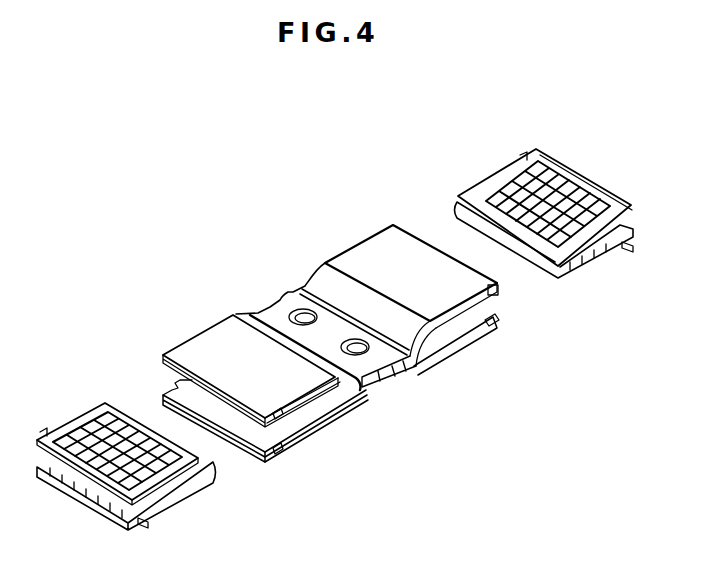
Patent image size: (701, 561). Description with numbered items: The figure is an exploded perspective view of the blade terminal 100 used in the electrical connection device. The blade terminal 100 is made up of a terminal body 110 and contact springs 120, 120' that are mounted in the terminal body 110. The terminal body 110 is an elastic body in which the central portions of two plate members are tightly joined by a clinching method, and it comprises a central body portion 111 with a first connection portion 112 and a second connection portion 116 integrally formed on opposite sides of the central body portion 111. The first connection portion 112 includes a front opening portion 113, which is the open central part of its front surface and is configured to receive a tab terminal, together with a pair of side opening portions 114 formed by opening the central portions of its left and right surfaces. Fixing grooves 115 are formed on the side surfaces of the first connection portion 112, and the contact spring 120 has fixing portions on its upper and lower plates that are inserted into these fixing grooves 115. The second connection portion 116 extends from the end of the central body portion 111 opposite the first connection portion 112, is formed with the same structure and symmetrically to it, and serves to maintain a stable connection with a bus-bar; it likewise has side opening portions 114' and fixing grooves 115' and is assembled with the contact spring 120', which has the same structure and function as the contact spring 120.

The blade terminal 100 is at (120, 342).
The terminal body 110 is at (268, 282).
The central body portion 111 is at (395, 378).
The first connection portion 112 is at (208, 352).
The front opening portion 113 is at (233, 440).
The side opening portions 114 is at (324, 438).
The fixing grooves 115 is at (313, 457).
The second connection portion 116 is at (365, 253).
The side opening portions 114' is at (485, 364).
The fixing grooves 115' is at (531, 344).
The contact spring 120 is at (118, 438).
The contact spring 120' is at (526, 181).